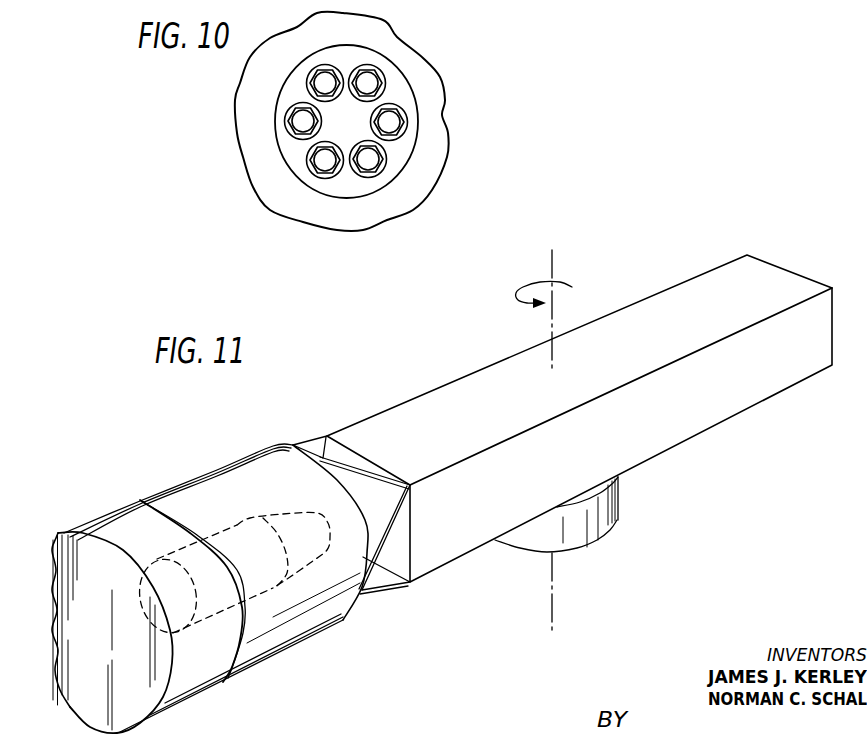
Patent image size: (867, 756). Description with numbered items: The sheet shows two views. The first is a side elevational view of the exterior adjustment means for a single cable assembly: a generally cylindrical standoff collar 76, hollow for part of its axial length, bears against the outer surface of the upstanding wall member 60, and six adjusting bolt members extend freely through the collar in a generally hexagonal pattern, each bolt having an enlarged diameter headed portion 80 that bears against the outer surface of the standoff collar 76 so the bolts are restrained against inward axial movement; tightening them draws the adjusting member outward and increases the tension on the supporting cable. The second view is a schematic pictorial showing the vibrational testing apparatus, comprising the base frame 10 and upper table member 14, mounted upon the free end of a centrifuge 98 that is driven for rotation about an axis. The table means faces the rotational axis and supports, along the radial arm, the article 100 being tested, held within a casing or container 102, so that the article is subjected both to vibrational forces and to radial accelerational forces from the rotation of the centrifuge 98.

In FIG. 10, the upstanding wall member 60 is at (393, 57).
In FIG. 10, the generally cylindrical standoff collar 76 is at (412, 82).
In FIG. 10, the enlarged diameter headed portion 80 is at (407, 113).
In FIG. 11, the base frame 10 is at (174, 708).
In FIG. 11, the upper table member 14 is at (221, 684).
In FIG. 11, the centrifuge 98 is at (653, 464).
In FIG. 11, the article being tested 100 is at (236, 523).
In FIG. 11, the casing or container 102 is at (283, 652).